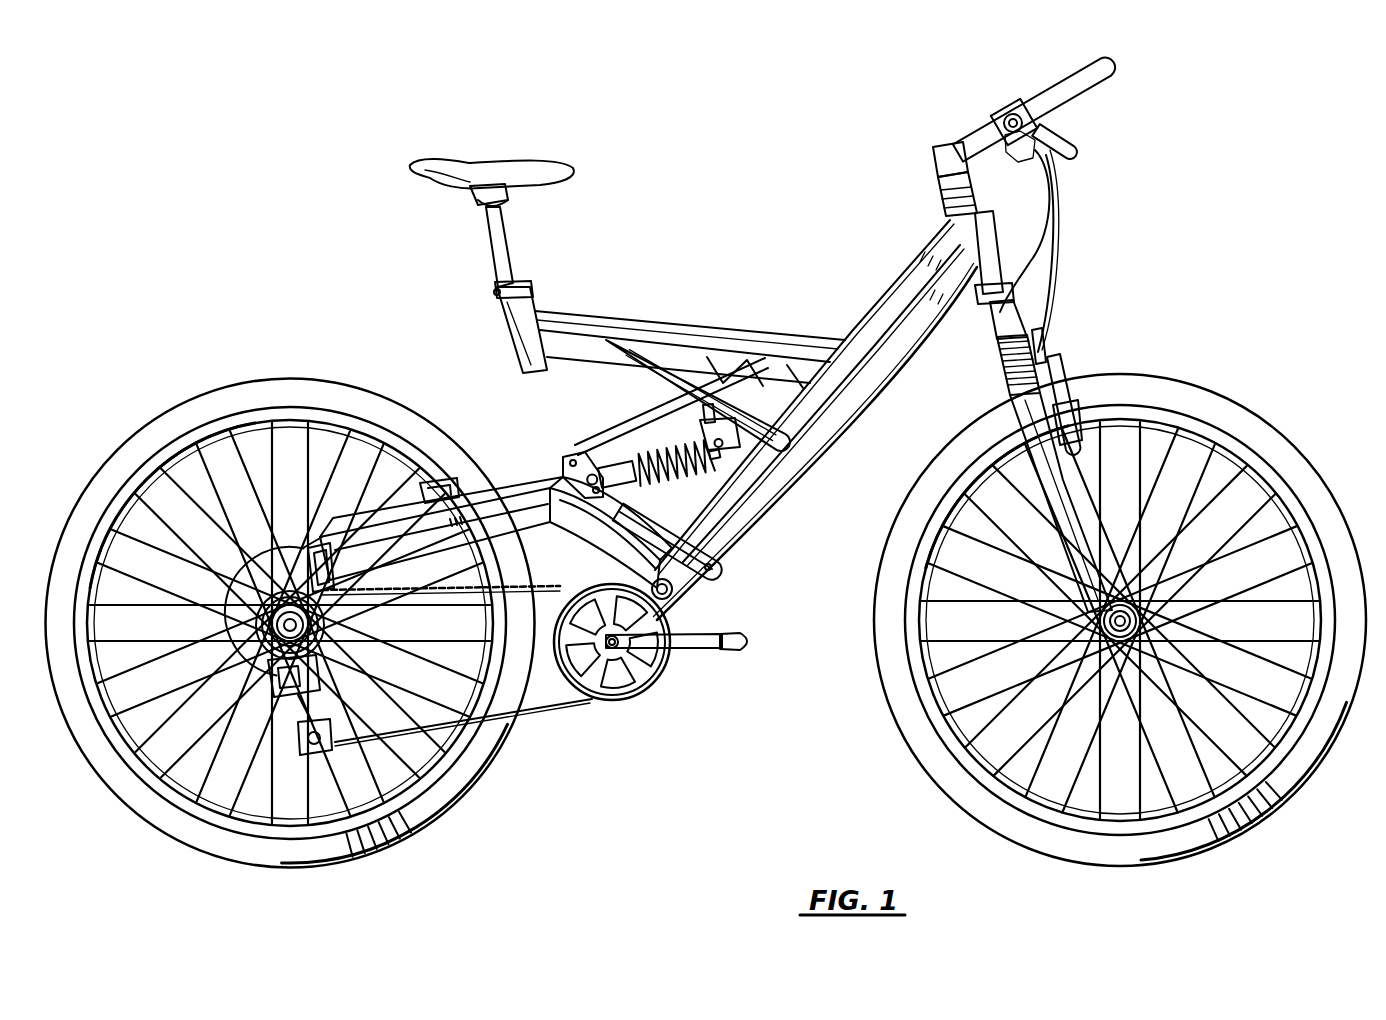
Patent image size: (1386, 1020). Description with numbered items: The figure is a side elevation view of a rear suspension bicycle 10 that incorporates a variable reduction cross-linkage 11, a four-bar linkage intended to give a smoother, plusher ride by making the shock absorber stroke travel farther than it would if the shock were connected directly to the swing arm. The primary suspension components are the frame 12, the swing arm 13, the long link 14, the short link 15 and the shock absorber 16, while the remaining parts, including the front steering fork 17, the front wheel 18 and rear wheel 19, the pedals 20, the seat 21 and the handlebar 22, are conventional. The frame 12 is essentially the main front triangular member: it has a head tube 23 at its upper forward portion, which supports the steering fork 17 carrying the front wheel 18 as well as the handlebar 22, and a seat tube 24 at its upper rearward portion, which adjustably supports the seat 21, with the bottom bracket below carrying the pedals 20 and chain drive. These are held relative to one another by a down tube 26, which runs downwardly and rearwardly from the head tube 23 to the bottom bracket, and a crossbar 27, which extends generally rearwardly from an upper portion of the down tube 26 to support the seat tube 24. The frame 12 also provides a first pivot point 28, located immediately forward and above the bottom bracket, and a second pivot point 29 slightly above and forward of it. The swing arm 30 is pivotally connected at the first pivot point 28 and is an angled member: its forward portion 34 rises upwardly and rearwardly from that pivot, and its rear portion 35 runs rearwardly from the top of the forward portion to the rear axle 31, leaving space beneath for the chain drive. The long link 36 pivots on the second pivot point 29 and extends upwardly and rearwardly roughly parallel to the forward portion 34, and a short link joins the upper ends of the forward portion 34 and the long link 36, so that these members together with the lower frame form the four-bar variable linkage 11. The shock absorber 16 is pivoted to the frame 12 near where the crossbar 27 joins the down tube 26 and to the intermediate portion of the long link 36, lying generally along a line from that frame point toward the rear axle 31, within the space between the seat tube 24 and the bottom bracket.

The rear suspension bicycle 10 is at (740, 168).
The variable reduction cross-linkage 11 is at (693, 487).
The frame 12 is at (905, 258).
The swing arm 13 is at (539, 470).
The long link 14 is at (702, 542).
The short link 15 is at (563, 457).
The shock absorber 16 is at (640, 448).
The front steering fork 17 is at (1018, 314).
The front wheel 18 is at (1238, 350).
The rear wheel 19 is at (239, 386).
The pedals 20 is at (738, 652).
The seat 21 is at (523, 158).
The handlebar 22 is at (1052, 95).
The head tube 23 is at (996, 254).
The seat tube 24 is at (518, 332).
The down tube 26 is at (875, 398).
The crossbar 27 is at (742, 338).
The first pivot point 28 is at (665, 588).
The second pivot point 29 is at (708, 565).
The swing arm 30 is at (334, 520).
The rear axle 31 is at (333, 618).
The forward portion of the swing arm 34 is at (610, 542).
The rear portion of the swing arm 35 is at (325, 533).
The long link 36 is at (683, 513).